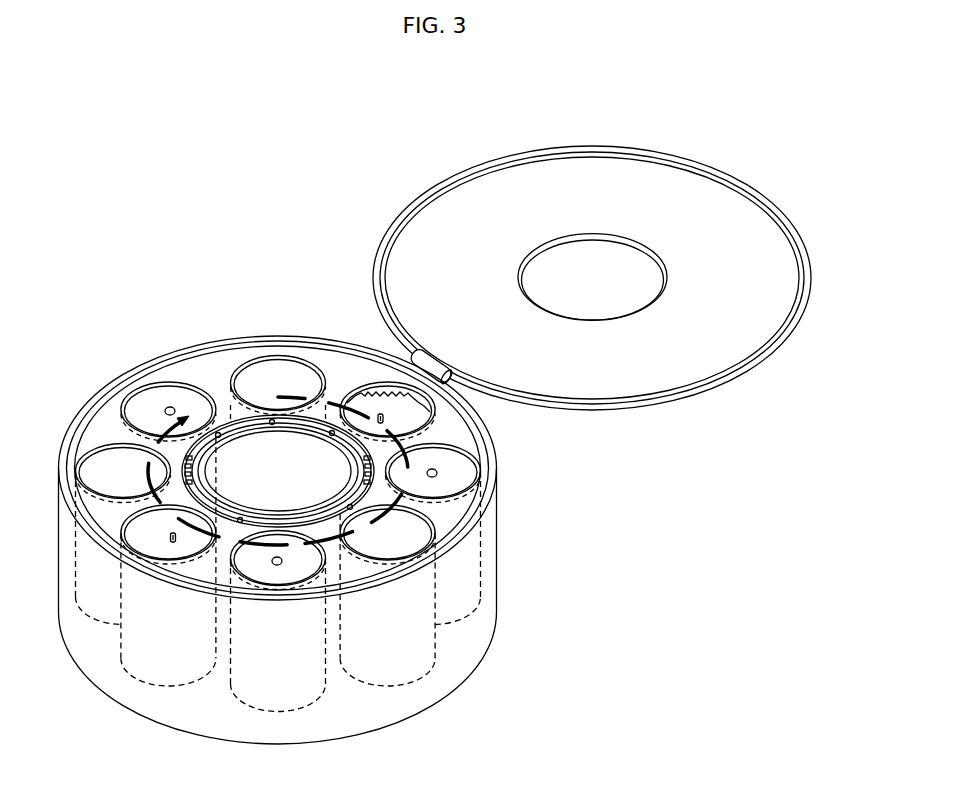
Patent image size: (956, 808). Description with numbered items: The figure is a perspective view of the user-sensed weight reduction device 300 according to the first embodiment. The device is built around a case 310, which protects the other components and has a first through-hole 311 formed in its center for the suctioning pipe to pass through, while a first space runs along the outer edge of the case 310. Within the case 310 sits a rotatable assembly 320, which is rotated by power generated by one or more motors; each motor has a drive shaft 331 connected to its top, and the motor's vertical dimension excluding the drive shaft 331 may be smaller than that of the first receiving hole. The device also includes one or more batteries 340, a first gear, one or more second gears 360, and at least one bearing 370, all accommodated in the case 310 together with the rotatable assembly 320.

The user-sensed weight reduction device 300 is at (107, 98).
The case 310 is at (488, 559).
The first through-hole 311 is at (301, 452).
The rotatable assembly 320 is at (333, 549).
The drive shaft 331 is at (173, 546).
The battery 340 is at (148, 403).
The second gear 360 is at (145, 546).
The bearing 370 is at (232, 422).